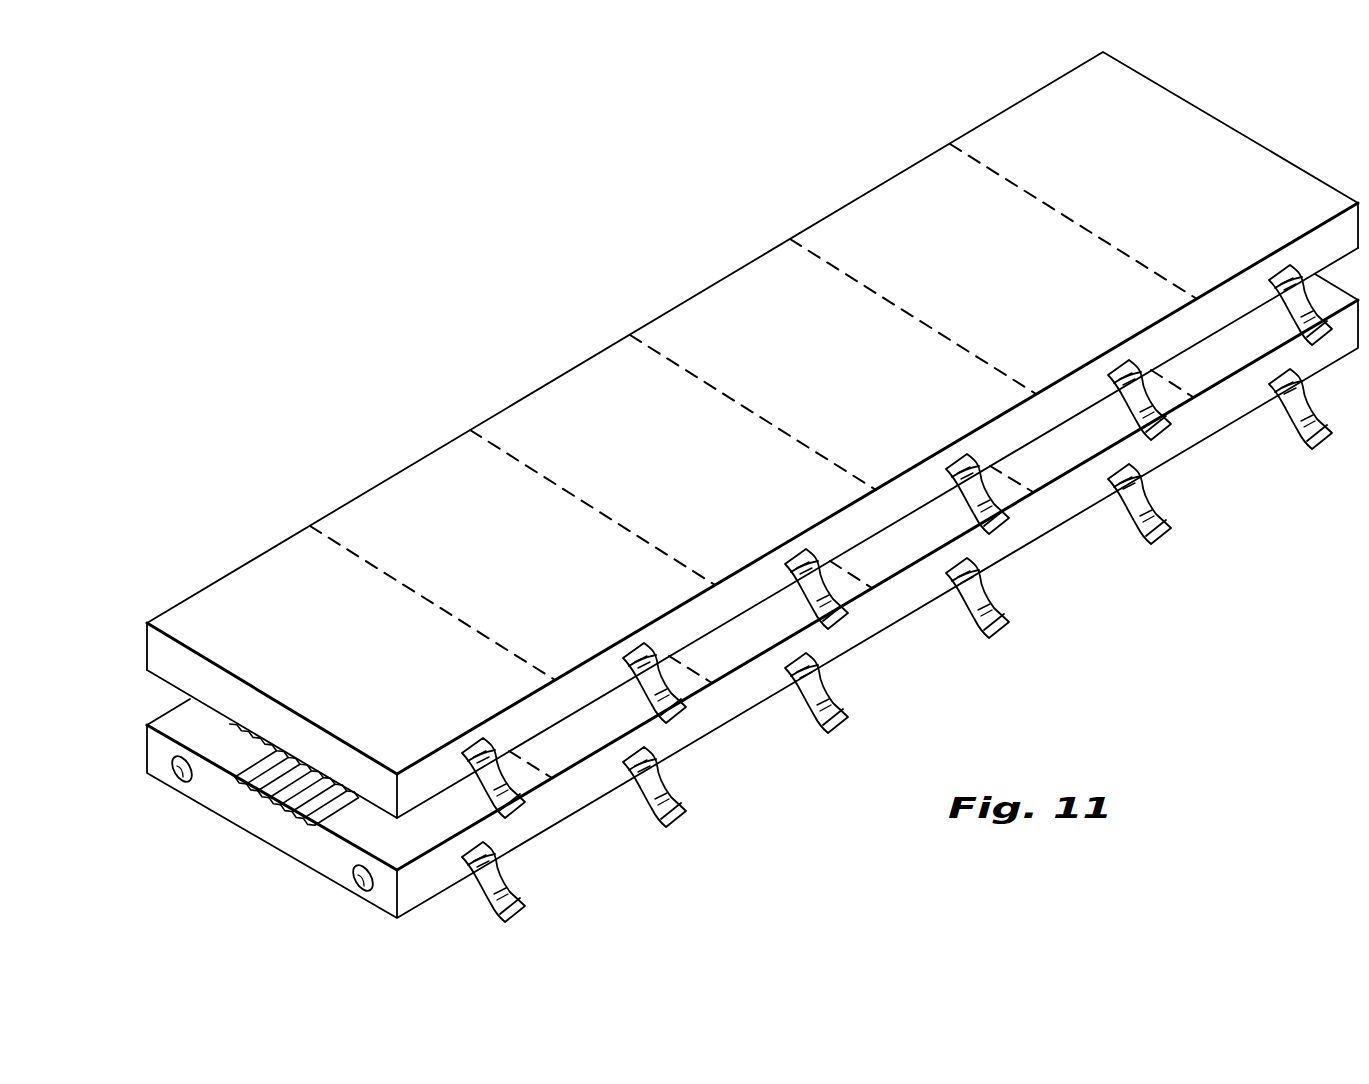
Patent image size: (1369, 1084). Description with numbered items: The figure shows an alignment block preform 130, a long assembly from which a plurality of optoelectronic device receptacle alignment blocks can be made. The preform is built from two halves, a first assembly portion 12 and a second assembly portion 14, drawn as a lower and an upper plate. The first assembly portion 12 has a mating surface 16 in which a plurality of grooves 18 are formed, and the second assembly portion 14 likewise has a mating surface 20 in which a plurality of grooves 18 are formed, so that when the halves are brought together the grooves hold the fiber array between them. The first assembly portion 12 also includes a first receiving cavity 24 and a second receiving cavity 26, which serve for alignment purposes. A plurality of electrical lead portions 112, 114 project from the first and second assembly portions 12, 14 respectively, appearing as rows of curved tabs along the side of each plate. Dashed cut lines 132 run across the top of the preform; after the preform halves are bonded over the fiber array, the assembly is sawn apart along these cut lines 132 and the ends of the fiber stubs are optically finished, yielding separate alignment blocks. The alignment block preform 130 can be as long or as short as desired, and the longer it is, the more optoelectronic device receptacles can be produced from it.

The first assembly portion 12 is at (140, 737).
The second assembly portion 14 is at (257, 562).
The mating surface 16 is at (422, 845).
The grooves 18 is at (255, 735).
The mating surface 20 is at (150, 680).
The first receiving cavity 24 is at (173, 779).
The second receiving cavity 26 is at (358, 889).
The electrical lead portions 112 is at (793, 702).
The electrical lead portions 114 is at (640, 690).
The alignment block preform 130 is at (665, 242).
The cut lines 132 is at (520, 468).